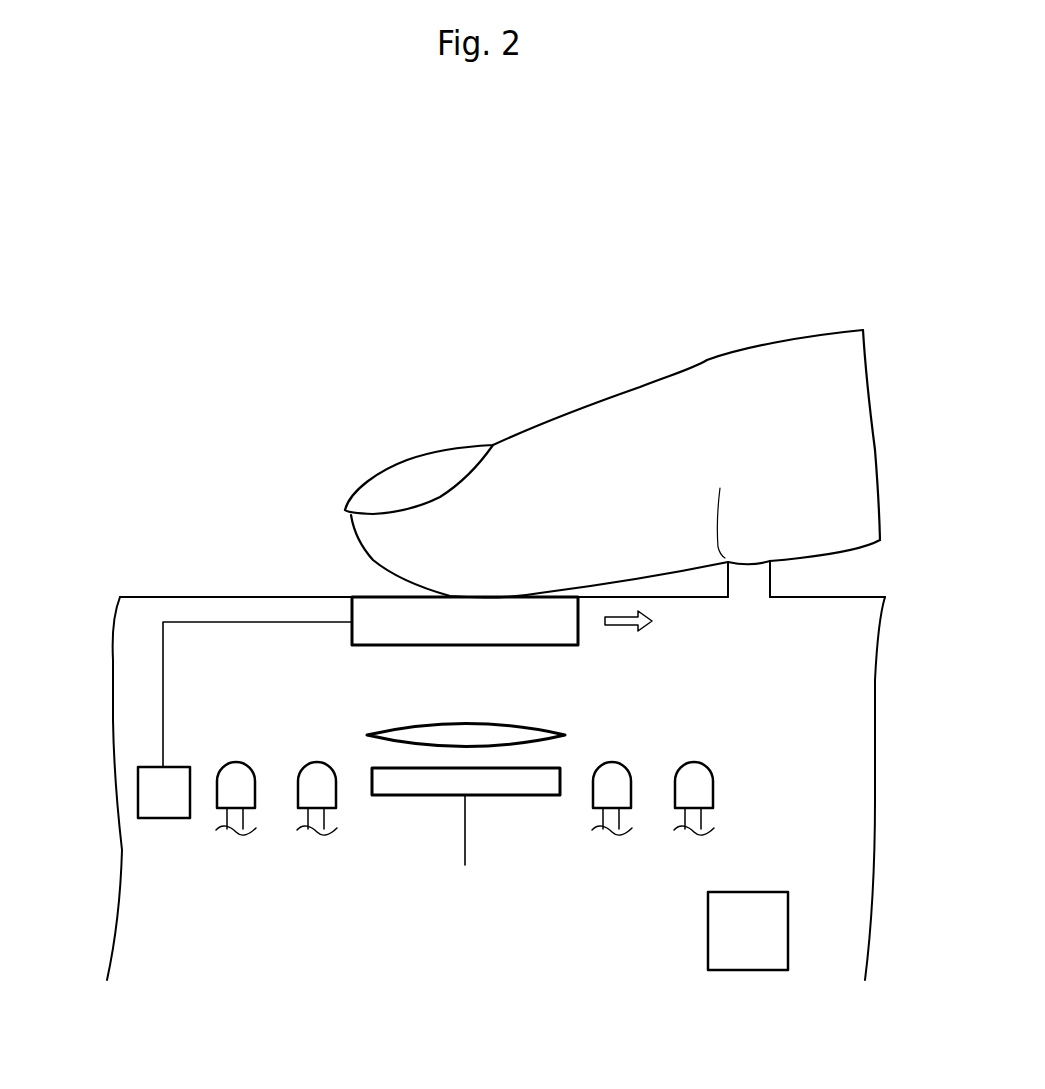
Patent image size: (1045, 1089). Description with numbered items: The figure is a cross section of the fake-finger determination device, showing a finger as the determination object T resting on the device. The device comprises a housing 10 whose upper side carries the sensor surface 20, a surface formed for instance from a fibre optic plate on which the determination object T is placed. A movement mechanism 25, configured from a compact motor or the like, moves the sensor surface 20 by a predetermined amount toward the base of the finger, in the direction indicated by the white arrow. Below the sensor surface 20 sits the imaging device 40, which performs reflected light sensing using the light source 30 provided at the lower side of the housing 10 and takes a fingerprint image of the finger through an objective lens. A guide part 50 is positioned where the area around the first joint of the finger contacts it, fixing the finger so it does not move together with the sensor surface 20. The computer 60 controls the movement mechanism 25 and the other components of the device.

The housing 10 is at (140, 912).
The sensor surface 20 is at (374, 598).
The movement mechanism 25 is at (163, 818).
The light source 30 is at (252, 775).
The imaging device 40 is at (506, 797).
The guide part 50 is at (773, 580).
The computer 60 is at (748, 892).
The determination object T is at (692, 370).